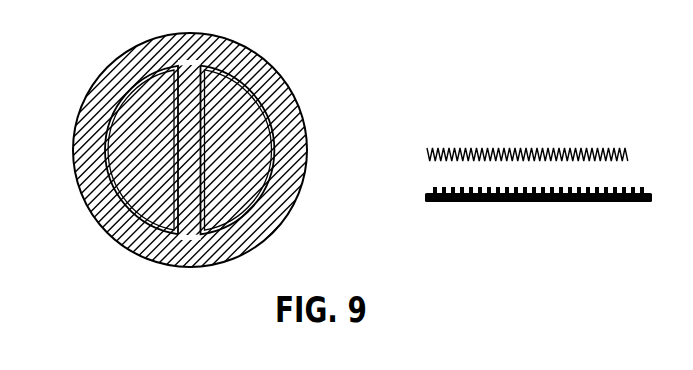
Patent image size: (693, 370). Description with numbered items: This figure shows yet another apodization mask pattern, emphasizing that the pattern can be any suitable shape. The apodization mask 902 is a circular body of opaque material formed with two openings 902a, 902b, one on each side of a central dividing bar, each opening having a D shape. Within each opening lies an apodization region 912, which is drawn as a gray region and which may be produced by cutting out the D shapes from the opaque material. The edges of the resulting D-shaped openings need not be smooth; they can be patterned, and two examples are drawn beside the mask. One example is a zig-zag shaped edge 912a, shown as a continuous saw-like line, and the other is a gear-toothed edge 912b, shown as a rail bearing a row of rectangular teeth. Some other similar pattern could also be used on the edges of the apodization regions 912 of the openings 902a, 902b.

The apodization mask 902 is at (307, 100).
The opening 902a is at (132, 180).
The opening 902b is at (257, 172).
The apodization region 912 is at (145, 72).
The zig-zag shaped edge 912a is at (535, 138).
The gear-toothed edge 912b is at (530, 213).